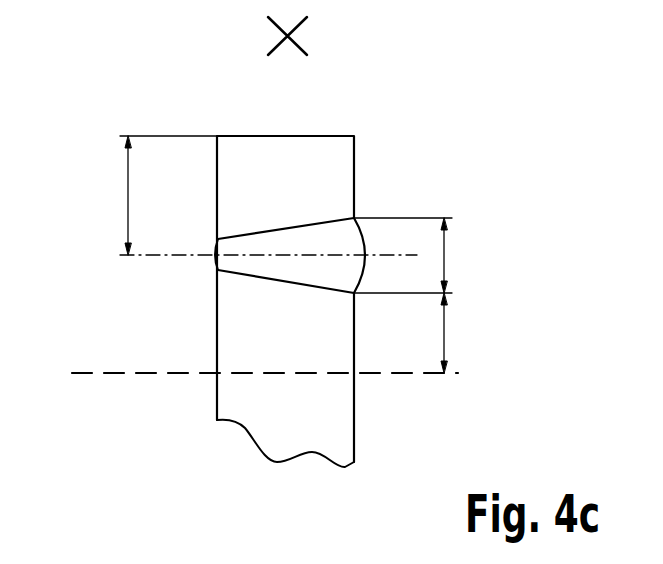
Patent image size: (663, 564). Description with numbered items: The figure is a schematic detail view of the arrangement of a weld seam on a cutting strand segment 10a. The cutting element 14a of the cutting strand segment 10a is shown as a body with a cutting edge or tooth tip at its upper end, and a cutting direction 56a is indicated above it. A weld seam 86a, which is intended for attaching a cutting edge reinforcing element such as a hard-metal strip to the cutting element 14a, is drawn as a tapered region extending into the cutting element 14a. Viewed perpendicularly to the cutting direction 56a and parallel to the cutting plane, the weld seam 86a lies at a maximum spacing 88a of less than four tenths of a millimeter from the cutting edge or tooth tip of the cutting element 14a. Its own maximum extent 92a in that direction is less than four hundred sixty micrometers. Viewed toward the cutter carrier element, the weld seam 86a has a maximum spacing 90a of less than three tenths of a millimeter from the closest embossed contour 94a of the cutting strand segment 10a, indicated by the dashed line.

The cutting strand segment 10a is at (482, 77).
The cutting element 14a is at (341, 158).
The cutting direction 56a is at (284, 35).
The weld seam 86a is at (280, 270).
The maximum spacing 88a is at (127, 195).
The maximum spacing 90a is at (446, 333).
The maximum extent 92a is at (446, 255).
The embossed contour 94a is at (118, 376).